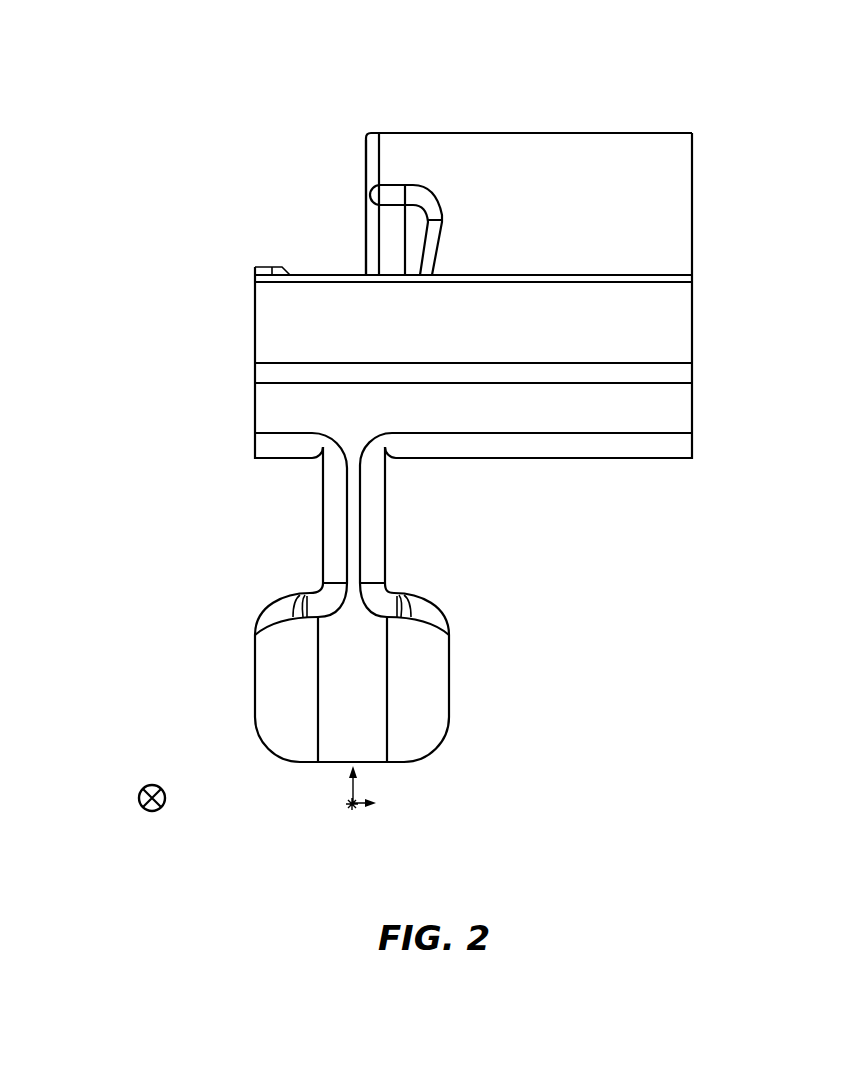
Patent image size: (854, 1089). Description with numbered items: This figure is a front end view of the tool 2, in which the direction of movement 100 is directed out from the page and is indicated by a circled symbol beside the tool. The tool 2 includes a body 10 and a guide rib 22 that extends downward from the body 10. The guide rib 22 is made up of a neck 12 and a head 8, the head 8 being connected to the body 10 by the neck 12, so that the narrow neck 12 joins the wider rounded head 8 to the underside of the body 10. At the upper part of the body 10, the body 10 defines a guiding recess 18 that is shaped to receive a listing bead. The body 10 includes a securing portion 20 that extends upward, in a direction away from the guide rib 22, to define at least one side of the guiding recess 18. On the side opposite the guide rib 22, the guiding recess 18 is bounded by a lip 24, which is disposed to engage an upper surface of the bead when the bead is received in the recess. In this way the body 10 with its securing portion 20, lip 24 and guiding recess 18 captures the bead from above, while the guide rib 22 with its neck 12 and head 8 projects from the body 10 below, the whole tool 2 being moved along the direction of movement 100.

The tool 2 is at (214, 297).
The head 8 is at (475, 593).
The body 10 is at (709, 133).
The neck 12 is at (475, 465).
The guiding recess 18 is at (388, 232).
The securing portion 20 is at (612, 165).
The guide rib 22 is at (237, 462).
The lip 24 is at (395, 165).
The direction of movement 100 is at (139, 795).